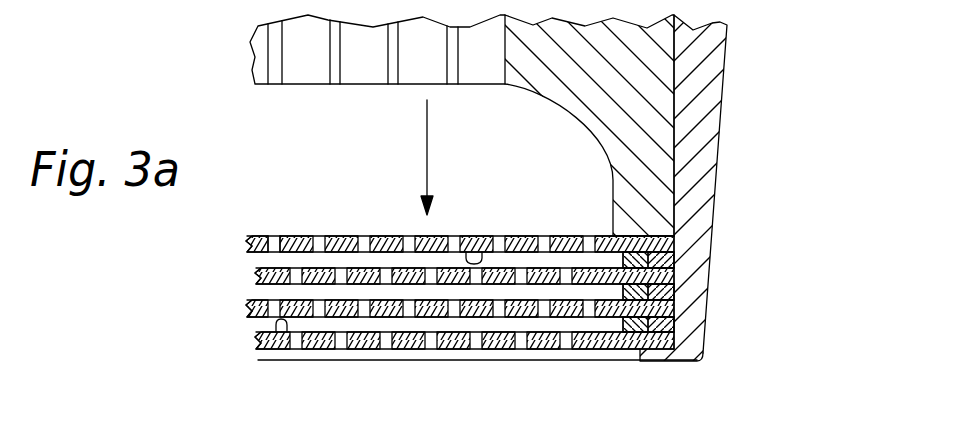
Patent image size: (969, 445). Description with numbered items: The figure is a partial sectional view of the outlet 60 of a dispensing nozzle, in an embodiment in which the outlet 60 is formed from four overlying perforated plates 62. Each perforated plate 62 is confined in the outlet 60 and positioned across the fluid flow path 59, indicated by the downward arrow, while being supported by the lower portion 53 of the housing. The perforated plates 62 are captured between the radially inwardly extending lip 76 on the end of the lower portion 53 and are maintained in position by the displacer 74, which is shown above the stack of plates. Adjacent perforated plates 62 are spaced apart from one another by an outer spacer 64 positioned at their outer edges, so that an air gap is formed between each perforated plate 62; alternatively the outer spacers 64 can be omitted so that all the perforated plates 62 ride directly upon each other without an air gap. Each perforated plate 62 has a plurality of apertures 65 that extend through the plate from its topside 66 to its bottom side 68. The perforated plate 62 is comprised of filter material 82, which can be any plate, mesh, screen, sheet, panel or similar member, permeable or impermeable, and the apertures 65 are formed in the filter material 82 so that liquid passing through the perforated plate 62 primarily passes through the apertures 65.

The lower portion 53 is at (715, 177).
The displacer 74 is at (616, 120).
The radially inwardly extending lip 76 is at (651, 363).
The fluid flow path 59 is at (427, 144).
The perforated plate 62 is at (248, 243).
The apertures 65 is at (407, 235).
The topside 66 is at (294, 235).
The bottom side 68 is at (474, 235).
The outer spacer 64 is at (678, 260).
The filter material 82 is at (249, 226).
The outlet 60 is at (428, 380).